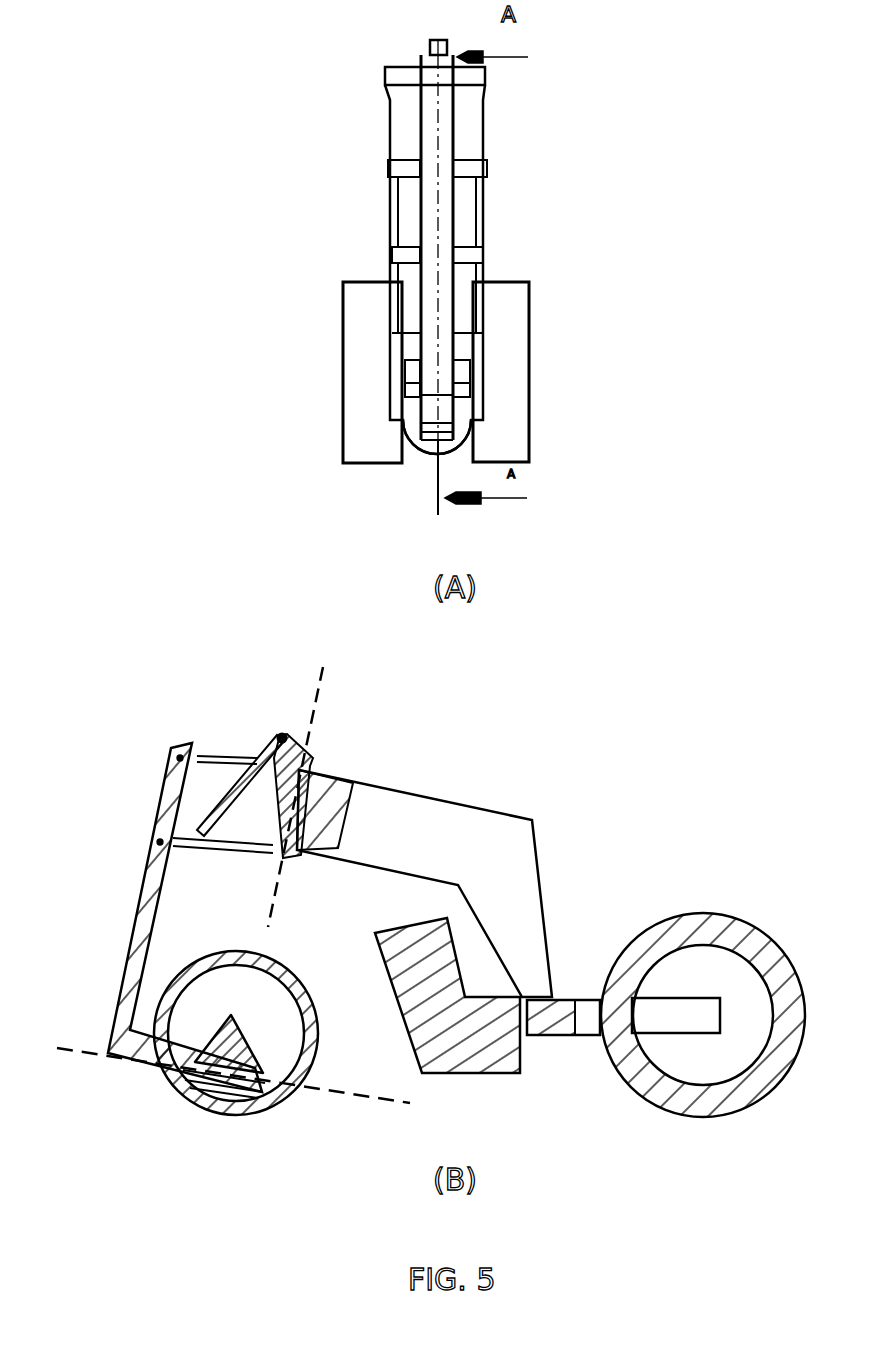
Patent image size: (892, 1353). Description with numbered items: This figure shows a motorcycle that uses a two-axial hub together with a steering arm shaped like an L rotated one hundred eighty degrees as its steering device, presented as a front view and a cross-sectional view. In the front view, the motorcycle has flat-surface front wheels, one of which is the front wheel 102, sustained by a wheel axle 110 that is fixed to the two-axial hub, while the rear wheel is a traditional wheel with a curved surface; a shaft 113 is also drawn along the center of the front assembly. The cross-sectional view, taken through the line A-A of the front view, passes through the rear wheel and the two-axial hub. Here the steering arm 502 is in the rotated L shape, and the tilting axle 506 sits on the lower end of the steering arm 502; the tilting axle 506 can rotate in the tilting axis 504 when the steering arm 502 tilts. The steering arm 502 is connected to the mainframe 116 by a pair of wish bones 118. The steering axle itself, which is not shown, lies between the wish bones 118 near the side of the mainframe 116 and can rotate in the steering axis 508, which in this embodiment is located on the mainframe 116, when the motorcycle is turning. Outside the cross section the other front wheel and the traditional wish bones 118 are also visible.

The front wheel 102 is at (512, 290).
The wheel axle 110 is at (468, 358).
The steering shaft 113 is at (430, 193).
The mainframe 116 is at (458, 815).
The wish bones 118 is at (228, 755).
The steering arm 502 is at (140, 917).
The tilting axis 504 is at (340, 1113).
The tilting axle 506 is at (183, 1093).
The steering axis 508 is at (310, 732).